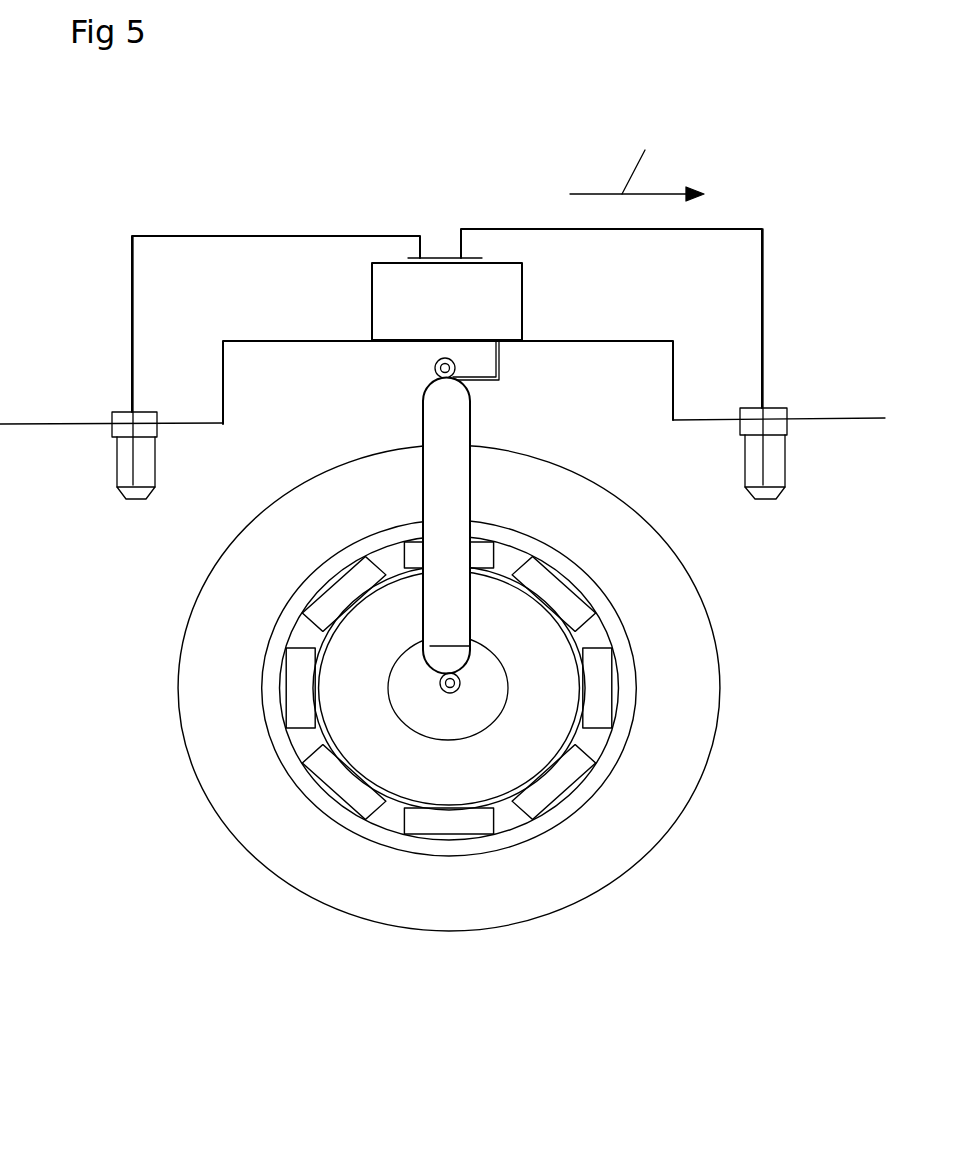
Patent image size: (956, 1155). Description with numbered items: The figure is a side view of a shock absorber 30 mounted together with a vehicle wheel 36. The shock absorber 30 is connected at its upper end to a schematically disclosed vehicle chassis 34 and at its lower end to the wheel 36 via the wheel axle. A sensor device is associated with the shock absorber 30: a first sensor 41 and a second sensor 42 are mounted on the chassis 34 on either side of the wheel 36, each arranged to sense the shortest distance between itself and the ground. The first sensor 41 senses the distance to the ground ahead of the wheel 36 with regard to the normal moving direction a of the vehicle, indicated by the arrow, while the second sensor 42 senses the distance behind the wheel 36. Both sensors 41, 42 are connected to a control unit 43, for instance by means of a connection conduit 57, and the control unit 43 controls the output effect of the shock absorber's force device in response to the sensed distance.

The shock absorber 30 is at (362, 691).
The vehicle chassis 34 is at (50, 428).
The wheel 36 is at (275, 820).
The first sensor 41 is at (777, 462).
The second sensor 42 is at (124, 457).
The control unit 43 is at (427, 293).
The connection conduit 57 is at (238, 233).
The normal moving direction a is at (637, 164).